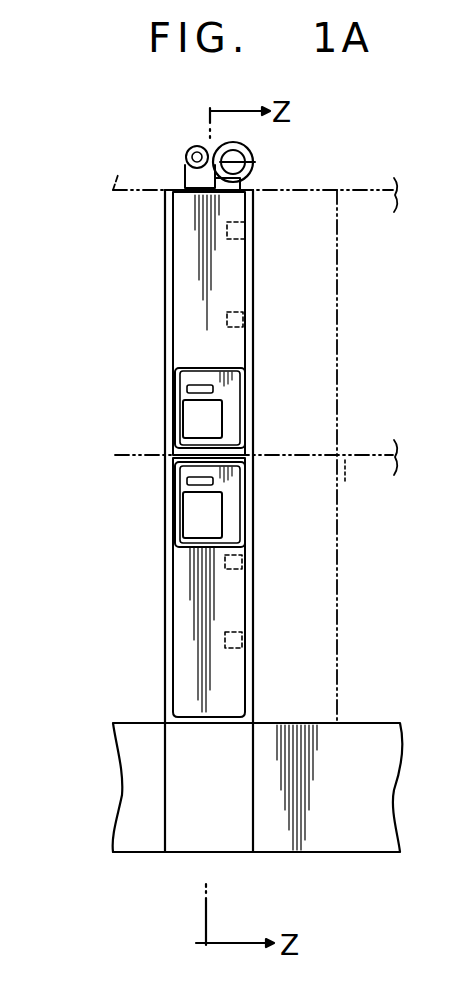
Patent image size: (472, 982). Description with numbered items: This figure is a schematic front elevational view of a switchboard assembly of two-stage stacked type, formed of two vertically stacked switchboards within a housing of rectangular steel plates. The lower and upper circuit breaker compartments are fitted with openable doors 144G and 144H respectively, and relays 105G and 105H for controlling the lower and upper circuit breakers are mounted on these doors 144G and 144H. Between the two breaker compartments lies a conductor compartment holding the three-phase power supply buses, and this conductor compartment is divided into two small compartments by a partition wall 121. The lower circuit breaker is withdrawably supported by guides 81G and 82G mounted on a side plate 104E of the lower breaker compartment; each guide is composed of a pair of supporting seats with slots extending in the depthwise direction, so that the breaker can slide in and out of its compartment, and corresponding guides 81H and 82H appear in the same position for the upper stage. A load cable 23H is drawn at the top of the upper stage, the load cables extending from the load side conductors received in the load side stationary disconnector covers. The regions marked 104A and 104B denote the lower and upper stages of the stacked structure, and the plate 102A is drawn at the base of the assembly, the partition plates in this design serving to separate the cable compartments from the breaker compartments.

The load cable 23H is at (255, 160).
The guide 81H is at (240, 222).
The guide 82H is at (237, 328).
The guide 81G is at (243, 551).
The guide 82G is at (237, 648).
The openable door 144H is at (193, 296).
The openable door 144G is at (193, 630).
The relay 105H is at (203, 418).
The relay 105G is at (197, 516).
The upper section 104B is at (317, 340).
The lower section 104A is at (310, 557).
The side plate 104E is at (163, 618).
The partition wall 121 is at (368, 489).
The base 102A is at (360, 723).